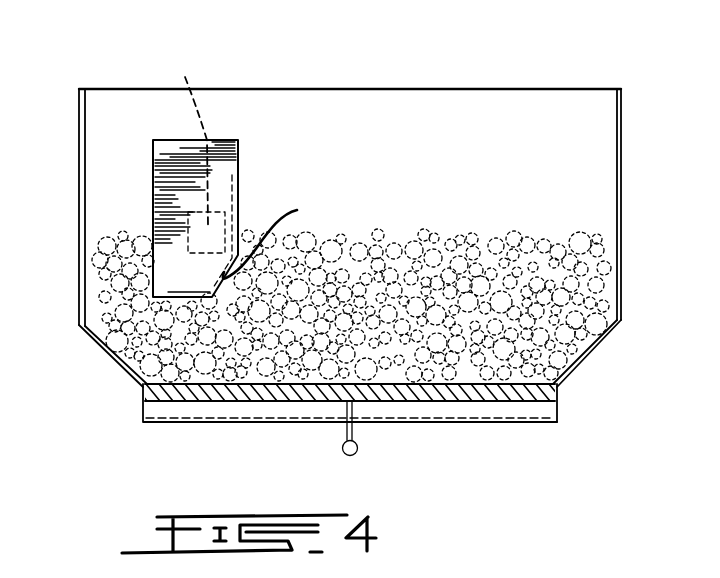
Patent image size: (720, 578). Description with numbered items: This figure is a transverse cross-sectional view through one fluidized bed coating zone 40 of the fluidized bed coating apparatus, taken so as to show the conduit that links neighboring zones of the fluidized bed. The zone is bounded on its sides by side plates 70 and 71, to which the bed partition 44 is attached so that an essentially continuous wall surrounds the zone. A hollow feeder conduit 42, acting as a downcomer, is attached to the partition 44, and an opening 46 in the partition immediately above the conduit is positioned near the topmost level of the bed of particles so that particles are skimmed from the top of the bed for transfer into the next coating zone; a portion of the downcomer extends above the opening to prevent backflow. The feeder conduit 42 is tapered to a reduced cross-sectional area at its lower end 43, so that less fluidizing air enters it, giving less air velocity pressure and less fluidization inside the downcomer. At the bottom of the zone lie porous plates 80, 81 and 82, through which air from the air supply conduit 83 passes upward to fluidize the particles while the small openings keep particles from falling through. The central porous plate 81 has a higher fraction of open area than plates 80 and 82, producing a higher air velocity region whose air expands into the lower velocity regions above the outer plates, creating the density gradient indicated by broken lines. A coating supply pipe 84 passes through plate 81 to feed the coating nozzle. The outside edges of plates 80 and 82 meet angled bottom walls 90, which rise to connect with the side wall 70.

The fluidized bed coating zone 40 is at (582, 79).
The feeder conduit 42 is at (227, 186).
The tapered lower end of downcomer 43 is at (277, 236).
The bed partition 44 is at (428, 99).
The opening 46 is at (192, 137).
The side plate 70 is at (620, 192).
The side plate 71 is at (80, 192).
The porous plate 80 is at (206, 402).
The porous plate 81 is at (418, 383).
The porous plate 82 is at (533, 401).
The air supply conduit 83 is at (508, 411).
The coating supply pipe 84 is at (349, 457).
The bottom wall 90 is at (117, 360).